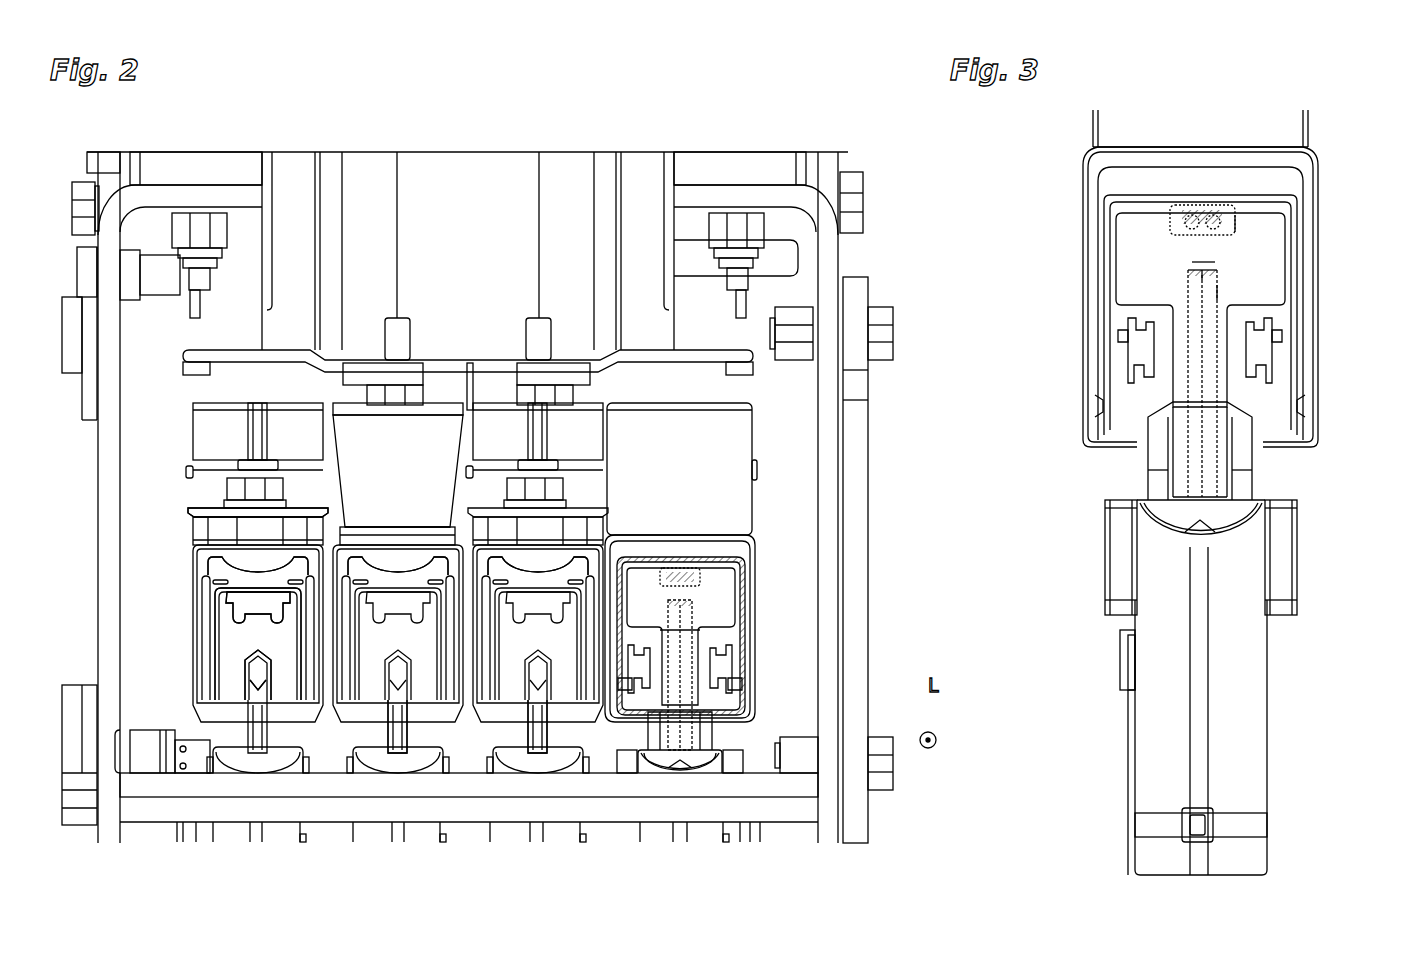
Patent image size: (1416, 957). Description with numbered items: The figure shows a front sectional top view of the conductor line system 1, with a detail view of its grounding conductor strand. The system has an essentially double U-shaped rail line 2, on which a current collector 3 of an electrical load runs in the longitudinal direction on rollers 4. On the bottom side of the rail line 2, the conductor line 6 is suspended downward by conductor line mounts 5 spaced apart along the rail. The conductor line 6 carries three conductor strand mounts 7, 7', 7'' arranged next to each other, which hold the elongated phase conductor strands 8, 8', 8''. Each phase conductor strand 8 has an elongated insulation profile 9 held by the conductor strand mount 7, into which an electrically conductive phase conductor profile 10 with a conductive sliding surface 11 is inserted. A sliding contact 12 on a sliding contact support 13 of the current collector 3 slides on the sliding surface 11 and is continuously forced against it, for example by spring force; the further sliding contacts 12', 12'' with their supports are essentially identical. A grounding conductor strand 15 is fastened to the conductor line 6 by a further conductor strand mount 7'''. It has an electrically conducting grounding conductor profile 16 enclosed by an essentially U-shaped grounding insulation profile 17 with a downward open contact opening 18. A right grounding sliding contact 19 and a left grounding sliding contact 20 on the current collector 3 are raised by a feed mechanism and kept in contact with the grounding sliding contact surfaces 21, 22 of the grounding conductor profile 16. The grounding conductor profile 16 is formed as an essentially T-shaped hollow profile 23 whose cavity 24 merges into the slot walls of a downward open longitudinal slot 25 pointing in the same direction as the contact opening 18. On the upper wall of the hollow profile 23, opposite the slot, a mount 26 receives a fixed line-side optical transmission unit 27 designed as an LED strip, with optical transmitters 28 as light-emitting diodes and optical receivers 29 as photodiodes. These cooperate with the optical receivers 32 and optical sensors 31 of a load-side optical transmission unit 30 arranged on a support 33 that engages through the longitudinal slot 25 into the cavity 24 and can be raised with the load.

In FIG. 2, the conductor line system 1 is at (805, 133).
In FIG. 2, the rail line 2 is at (317, 152).
In FIG. 2, the current collector 3 is at (95, 565).
In FIG. 2, the rollers 4 is at (250, 152).
In FIG. 2, the conductor line mounts 5 is at (192, 505).
In FIG. 2, the conductor line 6 is at (195, 390).
In FIG. 2, the conductor strand mount 7 is at (233, 643).
In FIG. 2, the conductor strand mount 7' is at (398, 615).
In FIG. 2, the conductor strand mount 7'' is at (562, 615).
In FIG. 2, the conductor strand mount 7''' is at (711, 628).
In FIG. 3, the conductor strand mount 7''' is at (1241, 278).
In FIG. 2, the phase conductor strand 8 is at (225, 570).
In FIG. 2, the phase conductor strand 8' is at (402, 501).
In FIG. 2, the phase conductor strand 8'' is at (548, 501).
In FIG. 2, the insulation profile 9 is at (214, 605).
In FIG. 2, the phase conductor profile 10 is at (228, 623).
In FIG. 2, the sliding surface 11 is at (248, 655).
In FIG. 2, the sliding contact 12 is at (202, 676).
In FIG. 2, the sliding contact 12' is at (366, 726).
In FIG. 2, the sliding contact 12'' is at (502, 726).
In FIG. 2, the sliding contact support 13 is at (235, 740).
In FIG. 2, the grounding conductor strand 15 is at (732, 554).
In FIG. 3, the grounding conductor strand 15 is at (1265, 195).
In FIG. 3, the grounding conductor profile 16 is at (1103, 198).
In FIG. 3, the grounding insulation profile 17 is at (1100, 182).
In FIG. 3, the contact opening 18 is at (1137, 439).
In FIG. 2, the right grounding sliding contact 19 is at (724, 738).
In FIG. 3, the right grounding sliding contact 19 is at (1239, 463).
In FIG. 2, the left grounding sliding contact 20 is at (642, 738).
In FIG. 3, the left grounding sliding contact 20 is at (1166, 463).
In FIG. 3, the grounding sliding contact surface 21 is at (1292, 402).
In FIG. 3, the grounding sliding contact surface 22 is at (1110, 404).
In FIG. 2, the hollow profile 23 is at (737, 638).
In FIG. 3, the hollow profile 23 is at (1112, 231).
In FIG. 2, the cavity 24 is at (708, 595).
In FIG. 3, the cavity 24 is at (1141, 284).
In FIG. 2, the longitudinal slot 25 is at (660, 626).
In FIG. 3, the longitudinal slot 25 is at (1226, 410).
In FIG. 3, the mount 26 is at (1235, 225).
In FIG. 2, the optical transmission unit 27 is at (683, 565).
In FIG. 3, the optical transmission unit 27 is at (1205, 228).
In FIG. 3, the optical transmitters 28 is at (1192, 226).
In FIG. 3, the optical receivers 29 is at (1217, 226).
In FIG. 3, the optical transmission unit 30 is at (1208, 262).
In FIG. 3, the optical sensors 31 is at (1215, 270).
In FIG. 2, the optical receivers 32 is at (697, 626).
In FIG. 3, the optical receivers 32 is at (1188, 269).
In FIG. 3, the support 33 is at (1217, 300).